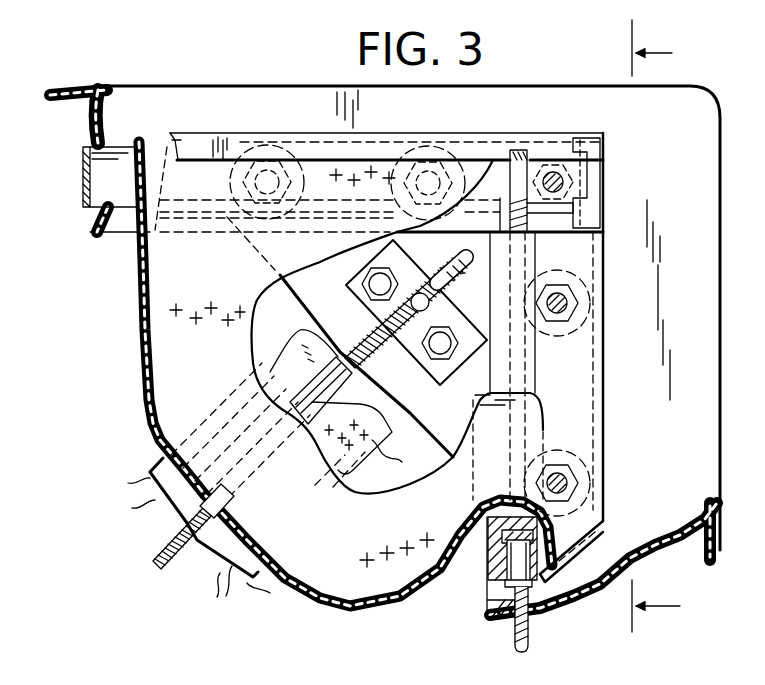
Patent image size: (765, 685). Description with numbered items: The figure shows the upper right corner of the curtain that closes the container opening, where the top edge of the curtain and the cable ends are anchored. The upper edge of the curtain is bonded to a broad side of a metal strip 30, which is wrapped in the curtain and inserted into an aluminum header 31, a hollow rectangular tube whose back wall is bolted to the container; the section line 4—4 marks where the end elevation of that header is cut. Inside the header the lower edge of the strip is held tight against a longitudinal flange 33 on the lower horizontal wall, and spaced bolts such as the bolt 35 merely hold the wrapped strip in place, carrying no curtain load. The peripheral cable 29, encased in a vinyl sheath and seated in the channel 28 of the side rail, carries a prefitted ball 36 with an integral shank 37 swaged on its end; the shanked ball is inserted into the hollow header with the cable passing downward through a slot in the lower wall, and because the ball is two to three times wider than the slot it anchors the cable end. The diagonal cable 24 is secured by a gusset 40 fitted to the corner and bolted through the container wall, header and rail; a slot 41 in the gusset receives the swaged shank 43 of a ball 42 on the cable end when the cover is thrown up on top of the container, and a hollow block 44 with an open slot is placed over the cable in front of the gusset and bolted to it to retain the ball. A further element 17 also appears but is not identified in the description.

The section line 4— 4 is at (672, 326).
The braided shield / grounding braid 17 is at (158, 360).
The diagonal cable 24 is at (157, 561).
The channel 28 is at (488, 563).
The peripheral cable 29 is at (515, 620).
The metal strip 30 is at (83, 193).
The header 31 is at (372, 139).
The longitudinal flange 33 is at (603, 242).
The bolt 35 is at (563, 183).
The ball 36 is at (513, 203).
The shank 37 is at (535, 168).
The gusset 40 is at (305, 287).
The slot 41 is at (474, 256).
The ball 42 is at (395, 338).
The shank 43 is at (437, 285).
The hollow block 44 is at (394, 318).